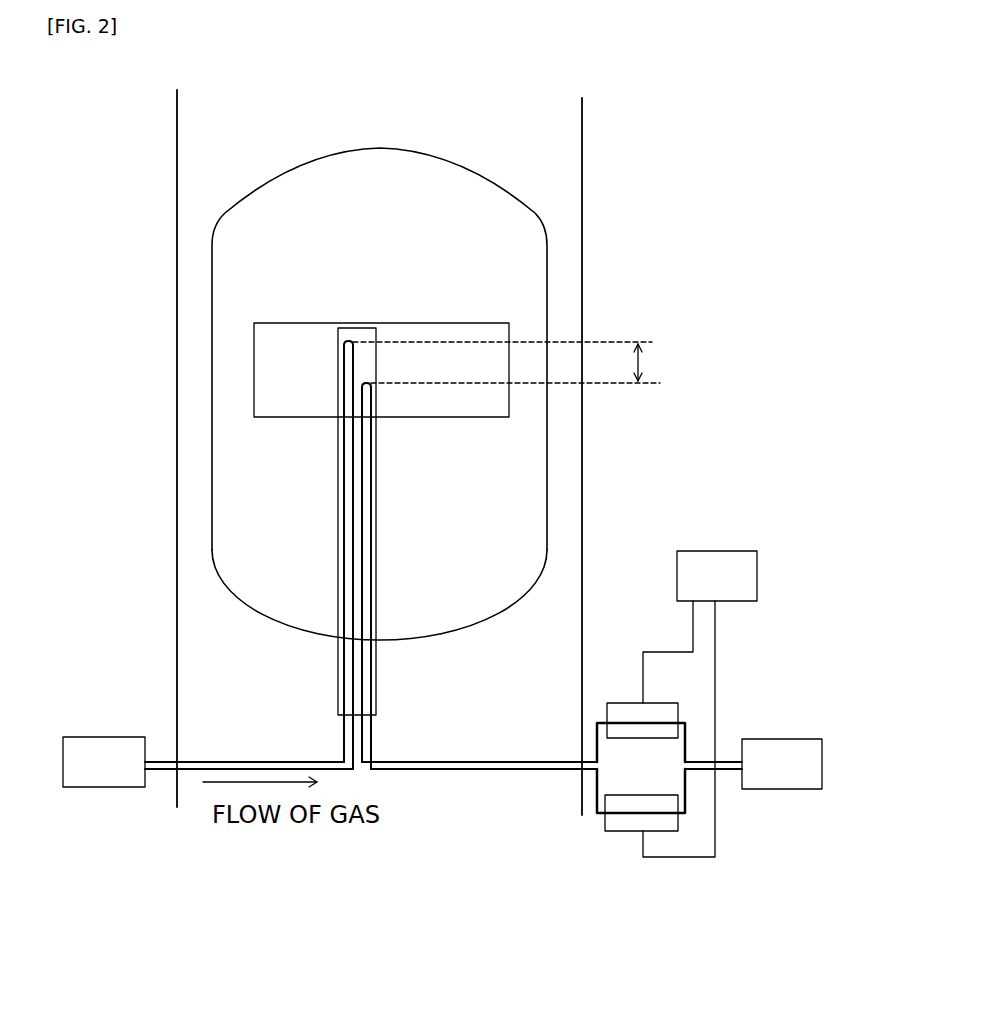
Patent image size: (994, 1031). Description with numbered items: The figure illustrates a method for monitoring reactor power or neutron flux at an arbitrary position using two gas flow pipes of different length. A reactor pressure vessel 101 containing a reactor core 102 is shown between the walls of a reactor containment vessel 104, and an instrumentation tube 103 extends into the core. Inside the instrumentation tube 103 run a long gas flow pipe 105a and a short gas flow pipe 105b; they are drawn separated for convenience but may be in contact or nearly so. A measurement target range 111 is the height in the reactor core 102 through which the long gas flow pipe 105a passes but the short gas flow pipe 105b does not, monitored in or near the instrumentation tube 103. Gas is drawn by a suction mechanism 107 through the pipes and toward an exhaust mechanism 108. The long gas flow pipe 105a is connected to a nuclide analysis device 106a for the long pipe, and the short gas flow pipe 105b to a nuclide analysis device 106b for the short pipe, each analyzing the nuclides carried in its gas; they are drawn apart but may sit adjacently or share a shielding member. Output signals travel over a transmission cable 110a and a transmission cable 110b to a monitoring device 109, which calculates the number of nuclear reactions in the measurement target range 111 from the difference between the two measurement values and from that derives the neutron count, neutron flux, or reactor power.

The reactor pressure vessel 101 is at (478, 197).
The reactor core 102 is at (254, 380).
The instrumentation tube 103 is at (338, 328).
The reactor containment vessel 104 is at (177, 243).
The long gas flow pipe 105a is at (468, 760).
The short gas flow pipe 105b is at (480, 772).
The nuclide analysis device for long gas flow pipe 106a is at (640, 703).
The nuclide analysis device for short gas flow pipe 106b is at (613, 832).
The suction mechanism 107 is at (83, 737).
The exhaust mechanism 108 is at (762, 739).
The monitoring device 109 is at (718, 550).
The transmission cable for long gas flow pipe 110a is at (688, 649).
The transmission cable for short gas flow pipe 110b is at (693, 858).
The measurement target range 111 is at (642, 373).